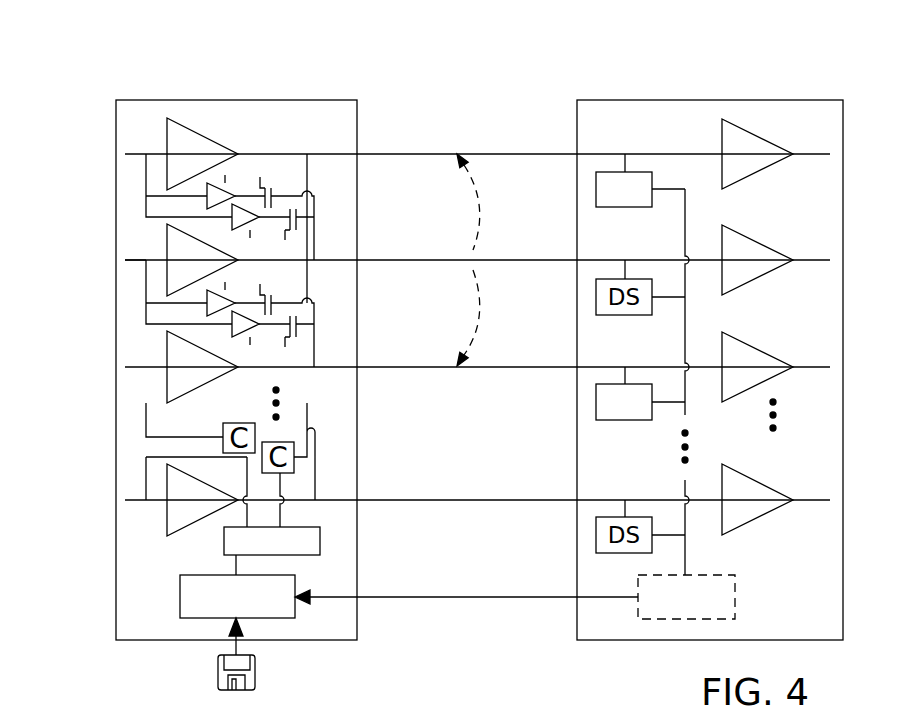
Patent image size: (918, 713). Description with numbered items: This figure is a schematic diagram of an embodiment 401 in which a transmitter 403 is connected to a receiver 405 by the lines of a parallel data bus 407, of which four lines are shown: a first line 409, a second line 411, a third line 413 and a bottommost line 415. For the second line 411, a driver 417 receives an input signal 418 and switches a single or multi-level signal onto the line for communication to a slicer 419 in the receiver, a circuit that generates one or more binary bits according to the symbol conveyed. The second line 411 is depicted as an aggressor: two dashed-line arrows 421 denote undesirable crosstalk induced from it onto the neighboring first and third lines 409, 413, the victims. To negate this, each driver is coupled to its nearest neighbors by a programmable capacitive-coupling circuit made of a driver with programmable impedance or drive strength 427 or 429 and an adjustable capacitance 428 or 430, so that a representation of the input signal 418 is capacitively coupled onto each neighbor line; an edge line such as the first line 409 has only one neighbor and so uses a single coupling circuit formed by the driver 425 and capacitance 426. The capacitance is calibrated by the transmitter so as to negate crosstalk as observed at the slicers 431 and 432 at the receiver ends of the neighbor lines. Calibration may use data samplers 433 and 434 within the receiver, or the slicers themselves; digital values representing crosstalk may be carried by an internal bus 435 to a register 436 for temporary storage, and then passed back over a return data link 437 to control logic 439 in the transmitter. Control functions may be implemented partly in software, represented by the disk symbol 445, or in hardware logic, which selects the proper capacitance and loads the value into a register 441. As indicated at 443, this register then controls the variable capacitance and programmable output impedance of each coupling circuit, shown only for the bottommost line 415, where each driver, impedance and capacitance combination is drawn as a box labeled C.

The embodiment 401 is at (176, 41).
The transmitter 403 is at (235, 100).
The receiver 405 is at (710, 101).
The bus 407 is at (492, 133).
The first line 409 is at (382, 153).
The second line 411 is at (382, 259).
The third line 413 is at (382, 366).
The bottommost line 415 is at (383, 499).
The driver 417 is at (167, 252).
The input signal 418 is at (124, 262).
The slicer 419 is at (752, 235).
The dashed-line arrows 421 is at (482, 202).
The driver with programmable impedance or drive strength 425 is at (207, 193).
The variable capacitance 426 is at (265, 187).
The driver with programmable impedance or drive strength 427 is at (232, 213).
The variable capacitance 428 is at (297, 221).
The driver with programmable impedance or drive strength 429 is at (207, 298).
The variable capacitance 430 is at (265, 294).
The slicer 431 is at (737, 128).
The slicer 432 is at (742, 338).
The data sampler 433 is at (625, 207).
The data sampler 434 is at (620, 420).
The internal bus 435 is at (685, 222).
The register 436 is at (737, 597).
The return data link 437 is at (440, 596).
The control logic 439 is at (180, 595).
The register 441 is at (224, 538).
The register control 443 is at (245, 522).
The disk symbol 445 is at (255, 657).